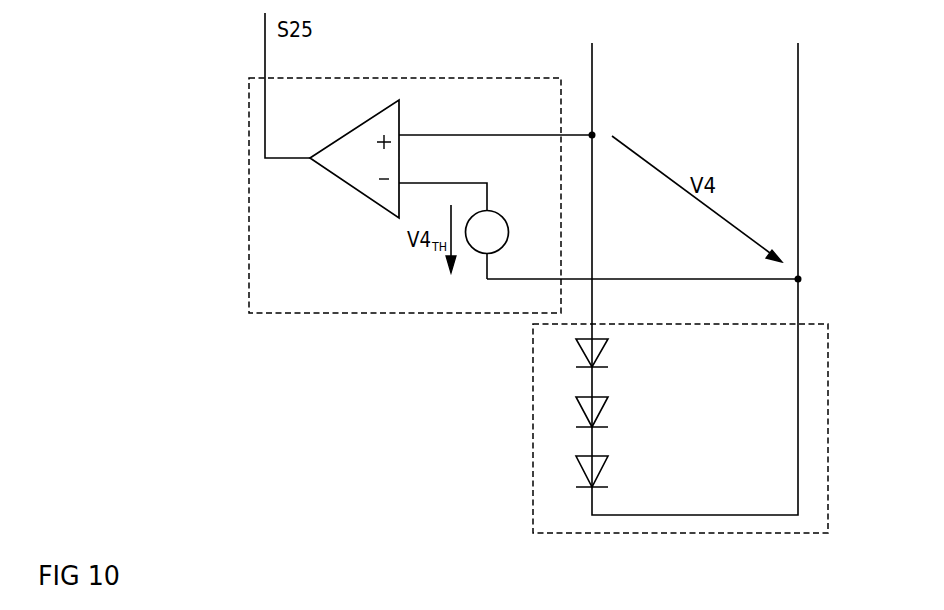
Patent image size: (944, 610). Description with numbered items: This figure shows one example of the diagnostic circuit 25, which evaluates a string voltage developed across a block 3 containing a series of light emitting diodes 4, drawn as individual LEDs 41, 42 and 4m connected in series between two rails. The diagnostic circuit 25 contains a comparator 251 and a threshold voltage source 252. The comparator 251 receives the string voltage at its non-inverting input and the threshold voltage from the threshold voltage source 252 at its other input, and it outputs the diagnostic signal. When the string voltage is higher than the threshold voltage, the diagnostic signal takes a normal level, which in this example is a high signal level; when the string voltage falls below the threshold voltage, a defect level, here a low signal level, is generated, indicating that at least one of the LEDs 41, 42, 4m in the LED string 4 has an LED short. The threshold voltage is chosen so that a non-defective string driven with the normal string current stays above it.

The diagnostic circuit 25 is at (250, 213).
The comparator 251 is at (353, 159).
The threshold voltage source 252 is at (473, 231).
The load / LED string block 3 is at (829, 413).
The series of light emitting diodes 4 is at (611, 414).
The LED string 41 is at (580, 354).
The second light emitting diode 42 is at (580, 413).
The m-th light emitting diode 4m is at (579, 472).